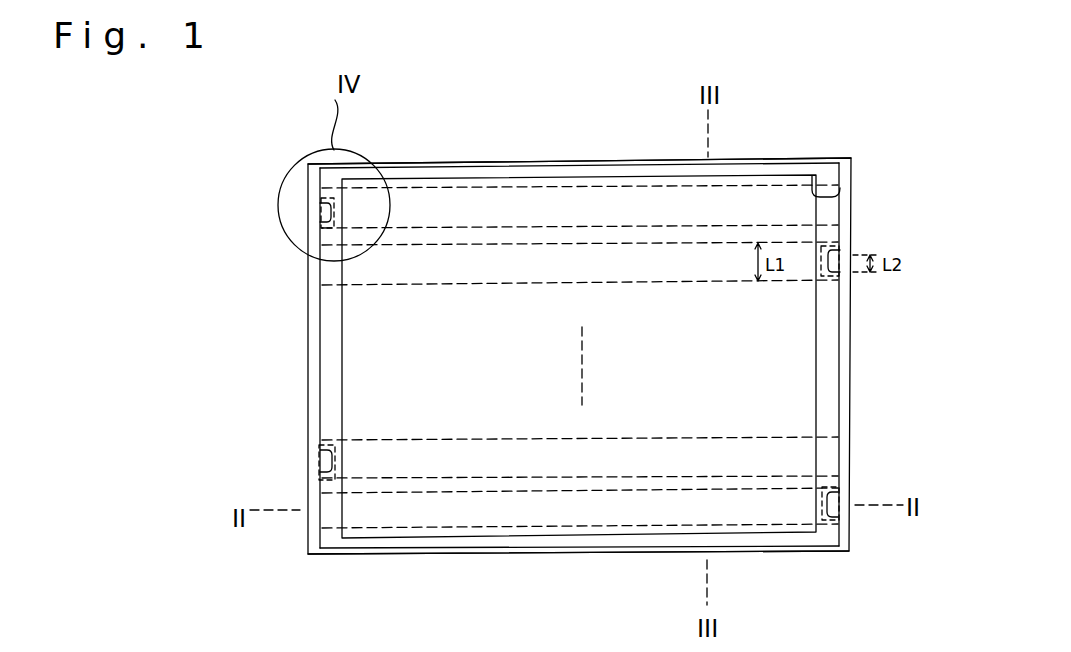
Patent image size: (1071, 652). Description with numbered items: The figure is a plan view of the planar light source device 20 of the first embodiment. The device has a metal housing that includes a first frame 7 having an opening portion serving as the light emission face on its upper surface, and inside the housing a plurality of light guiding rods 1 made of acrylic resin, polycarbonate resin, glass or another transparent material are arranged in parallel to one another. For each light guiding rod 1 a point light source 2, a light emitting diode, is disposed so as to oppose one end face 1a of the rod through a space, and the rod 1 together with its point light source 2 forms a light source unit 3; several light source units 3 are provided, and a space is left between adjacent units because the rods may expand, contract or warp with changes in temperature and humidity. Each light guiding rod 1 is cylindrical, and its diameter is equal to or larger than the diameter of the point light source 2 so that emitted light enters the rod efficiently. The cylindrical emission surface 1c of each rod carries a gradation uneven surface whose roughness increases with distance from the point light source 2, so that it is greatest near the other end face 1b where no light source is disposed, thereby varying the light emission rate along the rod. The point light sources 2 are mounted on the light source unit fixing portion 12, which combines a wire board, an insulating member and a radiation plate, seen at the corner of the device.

The light guiding rod 1 is at (322, 212).
The end face 1a is at (333, 206).
The other end face 1b is at (319, 273).
The emission surface 1c is at (500, 260).
The point light source 2 is at (322, 202).
The light source unit 3 is at (582, 363).
The first frame 7 is at (527, 548).
The light source unit fixing portion 12 is at (857, 158).
The planar light source device 20 is at (602, 162).